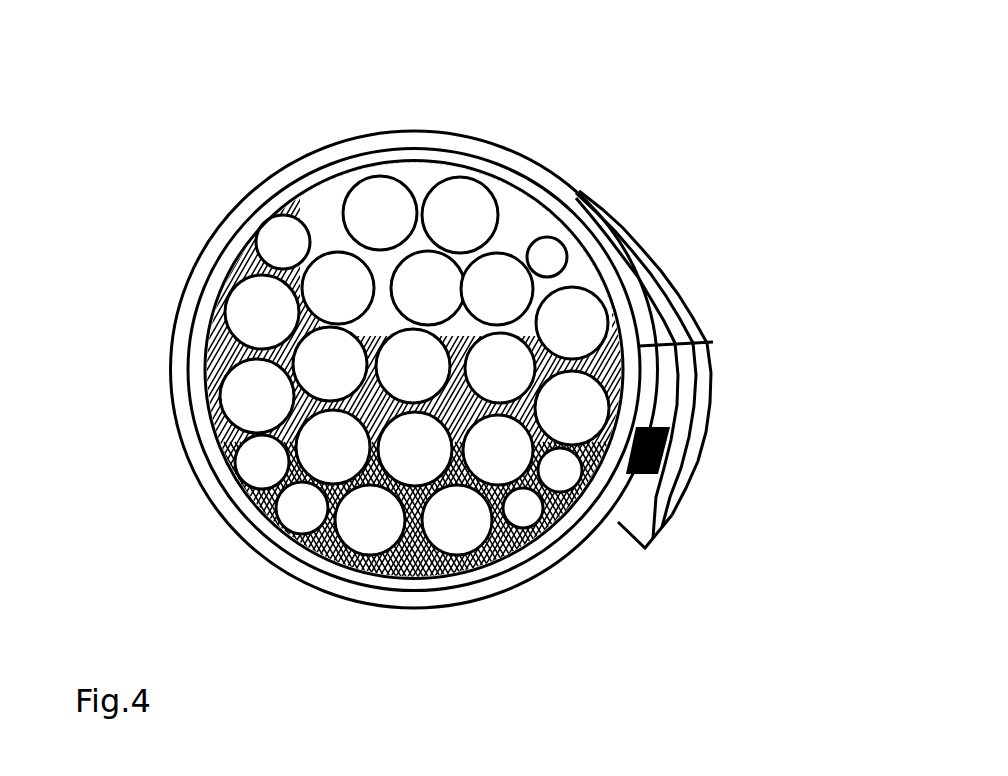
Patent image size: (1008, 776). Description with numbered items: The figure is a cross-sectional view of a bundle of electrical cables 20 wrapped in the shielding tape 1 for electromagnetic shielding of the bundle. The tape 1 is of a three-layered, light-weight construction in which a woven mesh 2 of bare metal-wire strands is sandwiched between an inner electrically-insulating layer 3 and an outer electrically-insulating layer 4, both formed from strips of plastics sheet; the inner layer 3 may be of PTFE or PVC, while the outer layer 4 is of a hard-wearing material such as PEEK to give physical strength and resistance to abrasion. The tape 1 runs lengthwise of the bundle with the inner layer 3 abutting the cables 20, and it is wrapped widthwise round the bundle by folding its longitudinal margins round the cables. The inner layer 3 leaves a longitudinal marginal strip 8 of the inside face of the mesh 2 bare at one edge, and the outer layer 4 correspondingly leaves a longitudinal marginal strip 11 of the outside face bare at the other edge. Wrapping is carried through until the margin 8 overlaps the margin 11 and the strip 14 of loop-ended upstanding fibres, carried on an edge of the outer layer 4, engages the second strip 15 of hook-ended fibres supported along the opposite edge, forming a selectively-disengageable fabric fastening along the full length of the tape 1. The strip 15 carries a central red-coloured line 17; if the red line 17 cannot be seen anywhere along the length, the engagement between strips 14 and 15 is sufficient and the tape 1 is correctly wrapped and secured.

The shielding tape 1 is at (630, 190).
The woven mesh 2 is at (627, 280).
The inner electrically-insulating layer 3 is at (208, 352).
The outer electrically-insulating layer 4 is at (668, 522).
The longitudinal marginal strip 8 is at (600, 265).
The longitudinal marginal strip 11 is at (648, 323).
The strip of upstanding fibres 14 is at (653, 496).
The second strip of upstanding fibres 15 is at (662, 400).
The red-coloured line 17 is at (665, 455).
The electrical cables 20 is at (283, 227).